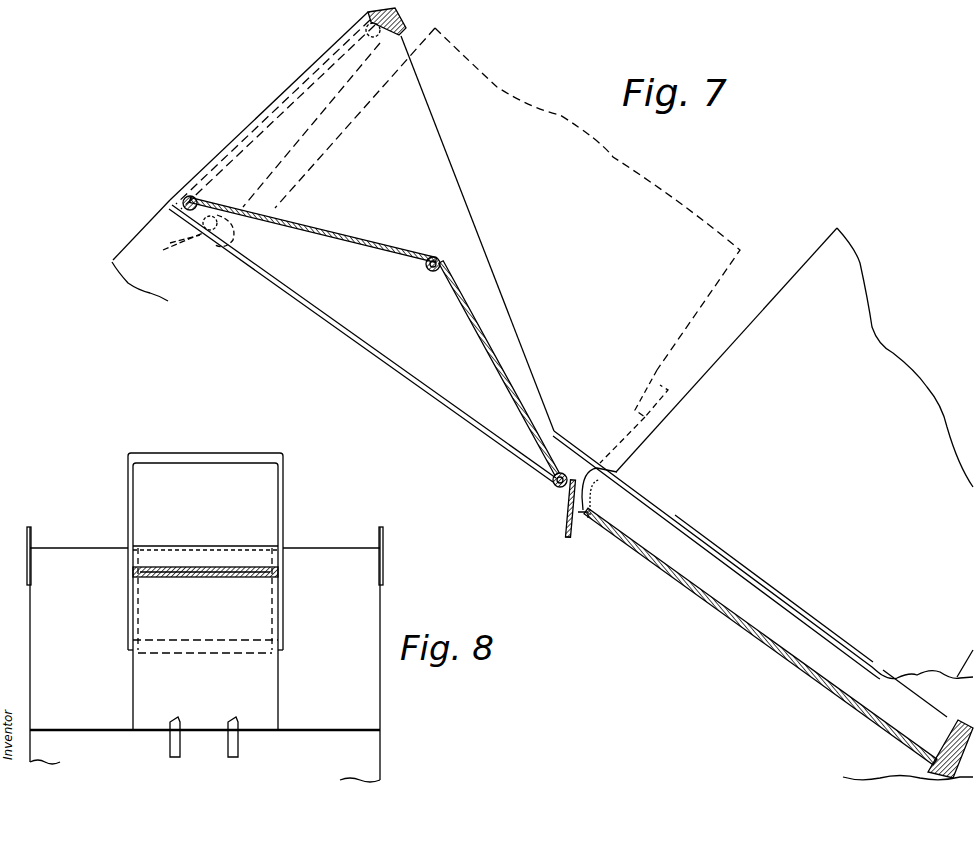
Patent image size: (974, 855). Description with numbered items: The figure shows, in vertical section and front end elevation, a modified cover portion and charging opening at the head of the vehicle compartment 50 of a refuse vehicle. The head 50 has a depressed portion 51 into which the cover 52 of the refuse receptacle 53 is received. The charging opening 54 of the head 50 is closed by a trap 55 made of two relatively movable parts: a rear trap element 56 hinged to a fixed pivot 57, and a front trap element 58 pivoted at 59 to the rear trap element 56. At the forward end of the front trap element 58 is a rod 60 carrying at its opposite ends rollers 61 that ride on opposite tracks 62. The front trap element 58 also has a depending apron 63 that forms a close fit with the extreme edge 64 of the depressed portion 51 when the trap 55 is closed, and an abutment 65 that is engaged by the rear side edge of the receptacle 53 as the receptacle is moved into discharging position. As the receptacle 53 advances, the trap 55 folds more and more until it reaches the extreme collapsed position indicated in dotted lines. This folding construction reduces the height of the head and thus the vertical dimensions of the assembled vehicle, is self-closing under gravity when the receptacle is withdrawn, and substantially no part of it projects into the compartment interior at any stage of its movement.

In FIG. 7, the head of the vehicle compartment 50 is at (920, 770).
In FIG. 8, the head of the vehicle compartment 50 is at (205, 654).
In FIG. 7, the depressed portion 51 is at (795, 670).
In FIG. 8, the depressed portion 51 is at (204, 715).
In FIG. 7, the cover 52 is at (757, 617).
In FIG. 7, the receptacle 53 is at (794, 472).
In FIG. 7, the charging opening 54 is at (433, 406).
In FIG. 7, the trap 55 is at (295, 97).
In FIG. 7, the rear trap element 56 is at (335, 230).
In FIG. 8, the rear trap element 56 is at (187, 552).
In FIG. 7, the fixed pivot 57 is at (181, 199).
In FIG. 7, the front trap element 58 is at (486, 348).
In FIG. 8, the front trap element 58 is at (205, 586).
In FIG. 7, the pivot 59 is at (425, 272).
In FIG. 8, the pivot 59 is at (210, 570).
In FIG. 7, the rod 60 is at (553, 492).
In FIG. 7, the rollers 61 is at (550, 482).
In FIG. 7, the tracks 62 is at (353, 340).
In FIG. 8, the tracks 62 is at (143, 598).
In FIG. 7, the depending apron 63 is at (565, 531).
In FIG. 7, the extreme edge of depressed portion 64 is at (587, 520).
In FIG. 7, the abutment 65 is at (132, 258).